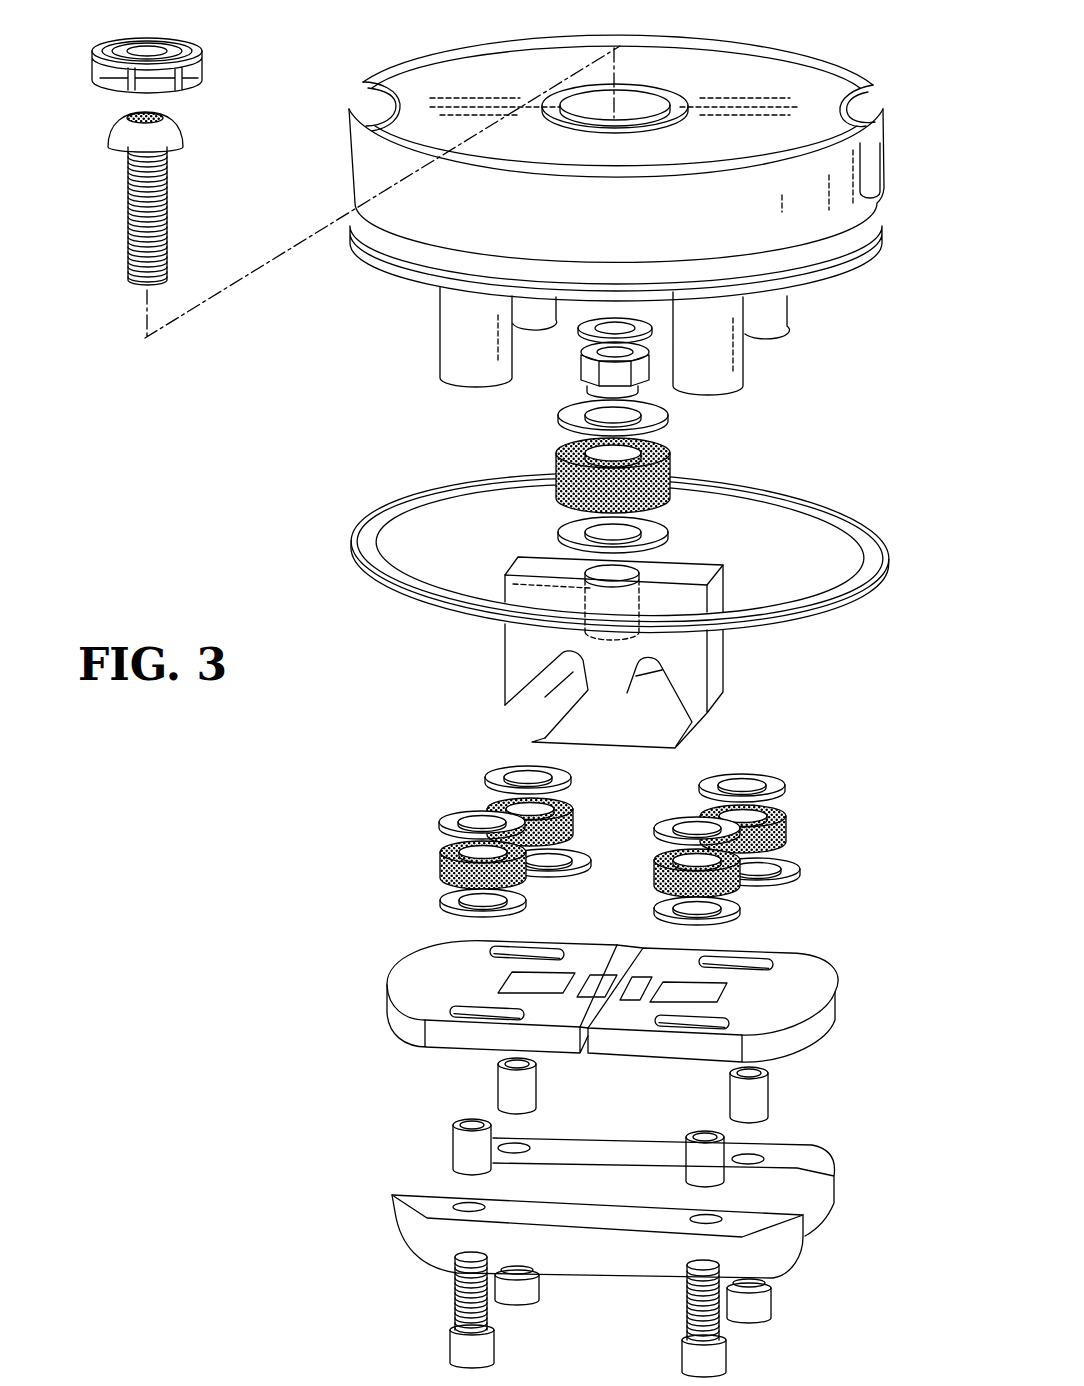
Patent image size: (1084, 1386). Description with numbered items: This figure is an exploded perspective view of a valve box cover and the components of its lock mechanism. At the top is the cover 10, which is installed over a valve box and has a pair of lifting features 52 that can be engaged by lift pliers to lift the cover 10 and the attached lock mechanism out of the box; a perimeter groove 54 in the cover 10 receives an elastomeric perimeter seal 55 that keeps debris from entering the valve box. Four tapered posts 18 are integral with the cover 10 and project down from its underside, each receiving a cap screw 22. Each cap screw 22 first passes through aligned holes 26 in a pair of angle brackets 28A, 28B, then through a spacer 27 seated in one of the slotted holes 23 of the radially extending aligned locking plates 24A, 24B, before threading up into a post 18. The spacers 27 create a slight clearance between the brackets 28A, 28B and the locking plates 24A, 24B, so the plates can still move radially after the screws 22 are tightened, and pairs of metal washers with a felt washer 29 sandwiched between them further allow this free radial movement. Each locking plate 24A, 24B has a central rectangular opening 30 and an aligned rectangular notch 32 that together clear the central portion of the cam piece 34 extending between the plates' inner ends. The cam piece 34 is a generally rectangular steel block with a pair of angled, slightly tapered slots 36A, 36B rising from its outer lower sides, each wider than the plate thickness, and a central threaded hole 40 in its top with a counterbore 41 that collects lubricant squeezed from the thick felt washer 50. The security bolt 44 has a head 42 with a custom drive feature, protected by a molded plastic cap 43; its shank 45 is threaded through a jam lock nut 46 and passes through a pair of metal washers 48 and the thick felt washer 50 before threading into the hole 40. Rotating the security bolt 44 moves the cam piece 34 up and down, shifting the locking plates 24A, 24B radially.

The cover 10 is at (446, 42).
The tapered posts 18 is at (450, 326).
The cap screws 22 is at (449, 1310).
The slotted holes 23 is at (470, 1008).
The locking plate 24A is at (462, 1050).
The locking plate 24B is at (820, 988).
The aligned holes 26 is at (455, 1207).
The spacers 27 is at (538, 1098).
The angle bracket 28A is at (394, 1228).
The angle bracket 28B is at (803, 1167).
The felt washer 29 is at (617, 840).
The central rectangular opening 30 is at (545, 983).
The rectangular notch 32 is at (602, 995).
The cam piece 34 is at (566, 652).
The tapered slot 36A is at (543, 700).
The tapered slot 36B is at (682, 712).
The central threaded hole 40 is at (497, 592).
The counterbore 41 is at (505, 584).
The security bolt head 42 is at (186, 126).
The molded plastic cap 43 is at (176, 40).
The security bolt 44 is at (158, 199).
The drive bolt shank 45 is at (137, 231).
The jam lock nut 46 is at (580, 370).
The metal washers 48 is at (672, 416).
The thick felt washer 50 is at (670, 470).
The lifting features 52 is at (360, 98).
The perimeter groove 54 is at (842, 235).
The elastomeric perimeter seal 55 is at (418, 497).